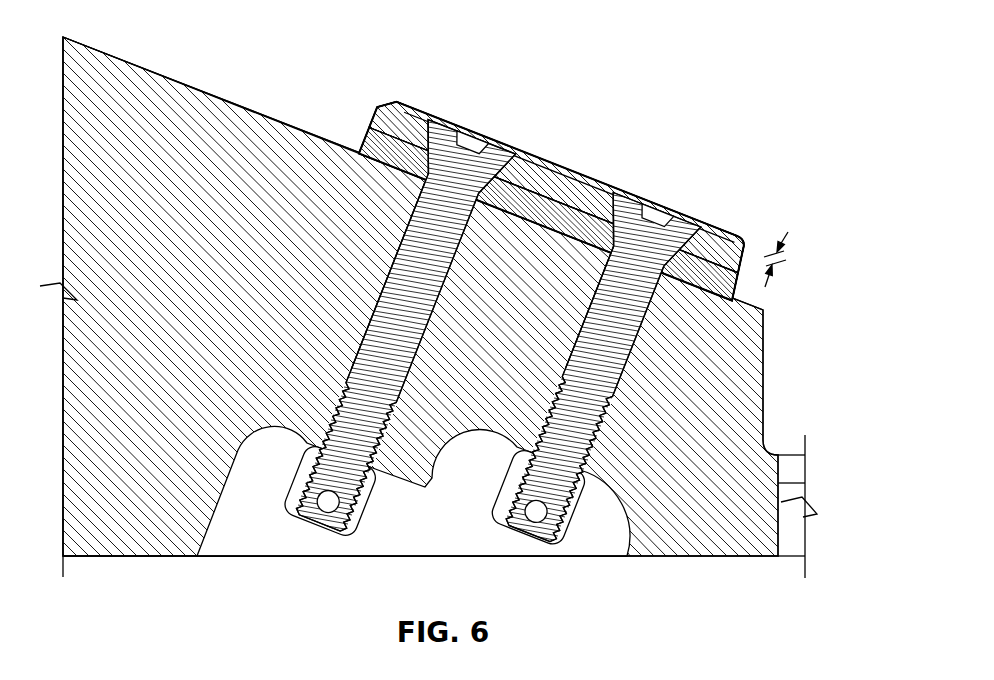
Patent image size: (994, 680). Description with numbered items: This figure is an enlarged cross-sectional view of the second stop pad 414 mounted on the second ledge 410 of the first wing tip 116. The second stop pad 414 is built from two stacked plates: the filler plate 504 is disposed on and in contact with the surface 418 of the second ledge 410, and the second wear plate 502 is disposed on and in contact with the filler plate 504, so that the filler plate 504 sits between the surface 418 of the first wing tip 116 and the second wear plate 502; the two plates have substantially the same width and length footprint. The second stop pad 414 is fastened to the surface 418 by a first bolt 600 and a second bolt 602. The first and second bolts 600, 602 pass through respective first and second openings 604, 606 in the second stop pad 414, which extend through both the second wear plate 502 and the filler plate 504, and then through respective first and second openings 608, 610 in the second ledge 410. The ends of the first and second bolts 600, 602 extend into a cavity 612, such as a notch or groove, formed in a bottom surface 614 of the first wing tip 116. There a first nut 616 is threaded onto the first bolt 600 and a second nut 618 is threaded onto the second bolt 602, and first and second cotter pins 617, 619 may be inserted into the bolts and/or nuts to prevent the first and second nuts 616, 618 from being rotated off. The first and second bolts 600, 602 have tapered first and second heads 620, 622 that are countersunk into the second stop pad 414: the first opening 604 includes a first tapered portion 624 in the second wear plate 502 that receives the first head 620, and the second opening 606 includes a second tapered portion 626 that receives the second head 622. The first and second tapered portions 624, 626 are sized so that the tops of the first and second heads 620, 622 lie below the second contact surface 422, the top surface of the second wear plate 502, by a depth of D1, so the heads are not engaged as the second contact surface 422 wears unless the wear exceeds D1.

The first wing tip 116 is at (113, 127).
The second ledge 410 is at (165, 153).
The second stop pad 414 is at (498, 55).
The surface 418 is at (282, 123).
The second contact surface 422 is at (723, 233).
The second wear plate 502 is at (525, 157).
The filler plate 504 is at (558, 213).
The first bolt 600 is at (360, 351).
The second bolt 602 is at (560, 385).
The first opening 604 is at (420, 160).
The second opening 606 is at (604, 237).
The first opening 608 is at (388, 263).
The second opening 610 is at (576, 320).
The cavity 612 is at (385, 575).
The bottom surface 614 is at (140, 556).
The first nut 616 is at (300, 477).
The first cotter pin 617 is at (326, 510).
The second nut 618 is at (487, 432).
The second cotter pin 619 is at (534, 523).
The first head 620 is at (472, 133).
The second head 622 is at (657, 230).
The first tapered portion 624 is at (425, 128).
The second tapered portion 626 is at (608, 211).
The countersink depth D1 is at (788, 232).